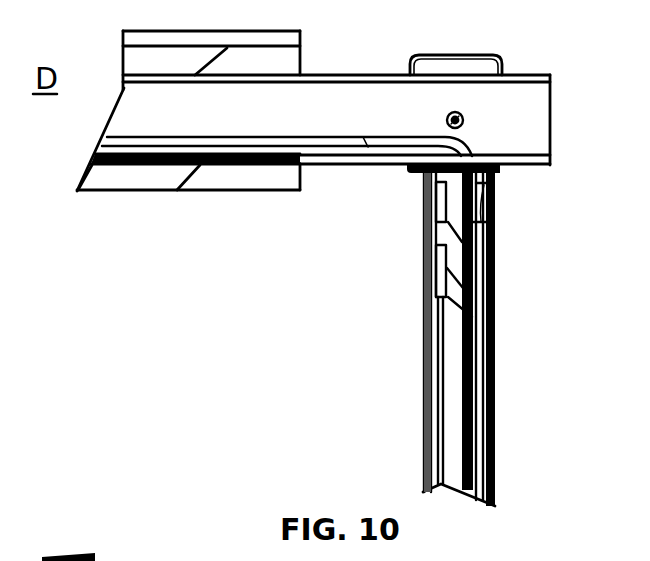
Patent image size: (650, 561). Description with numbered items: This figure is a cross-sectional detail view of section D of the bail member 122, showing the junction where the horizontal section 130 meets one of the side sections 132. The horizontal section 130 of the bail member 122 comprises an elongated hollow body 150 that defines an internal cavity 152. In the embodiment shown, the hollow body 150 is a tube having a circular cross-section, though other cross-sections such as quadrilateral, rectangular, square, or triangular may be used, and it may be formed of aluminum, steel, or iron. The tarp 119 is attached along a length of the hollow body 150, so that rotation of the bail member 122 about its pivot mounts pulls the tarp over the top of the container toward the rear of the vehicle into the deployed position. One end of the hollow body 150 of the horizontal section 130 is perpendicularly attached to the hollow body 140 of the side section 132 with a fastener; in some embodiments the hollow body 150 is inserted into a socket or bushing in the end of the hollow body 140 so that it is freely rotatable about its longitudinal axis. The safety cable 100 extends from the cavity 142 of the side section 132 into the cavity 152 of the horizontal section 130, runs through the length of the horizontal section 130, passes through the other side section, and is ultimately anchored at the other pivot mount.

The safety cable 100 is at (477, 360).
The tarp roller 119 is at (133, 177).
The bail member 122 is at (180, 325).
The horizontal section 130 is at (351, 53).
The side section 132 is at (510, 265).
The hollow body of the side section 140 is at (423, 322).
The cavity of the side section 142 is at (448, 375).
The hollow body 150 is at (365, 165).
The internal cavity 152 is at (285, 112).